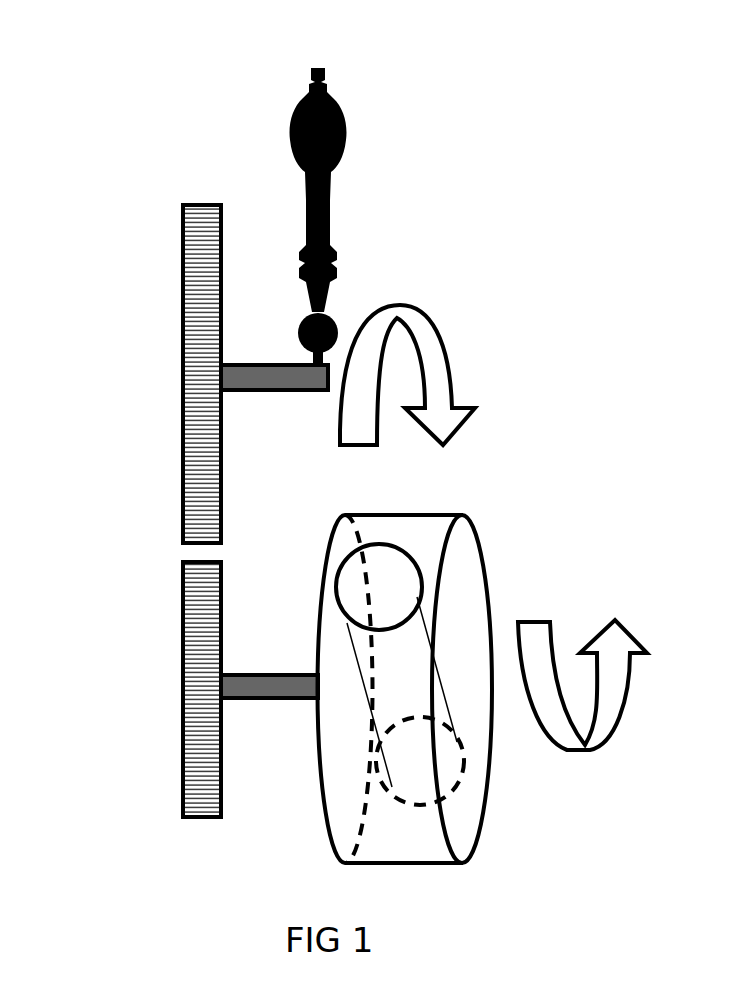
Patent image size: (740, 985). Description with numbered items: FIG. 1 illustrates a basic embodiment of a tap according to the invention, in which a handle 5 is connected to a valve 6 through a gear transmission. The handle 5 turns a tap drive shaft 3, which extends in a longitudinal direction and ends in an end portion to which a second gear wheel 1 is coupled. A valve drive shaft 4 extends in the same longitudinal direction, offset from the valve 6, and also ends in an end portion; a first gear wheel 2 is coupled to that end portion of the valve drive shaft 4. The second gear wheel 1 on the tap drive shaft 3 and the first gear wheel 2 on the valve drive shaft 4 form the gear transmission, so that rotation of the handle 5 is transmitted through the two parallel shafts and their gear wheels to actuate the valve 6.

The second gear wheel 1 is at (198, 203).
The first gear wheel 2 is at (163, 762).
The tap drive shaft 3 is at (253, 365).
The valve drive shaft 4 is at (277, 698).
The handle 5 is at (345, 103).
The valve 6 is at (490, 830).